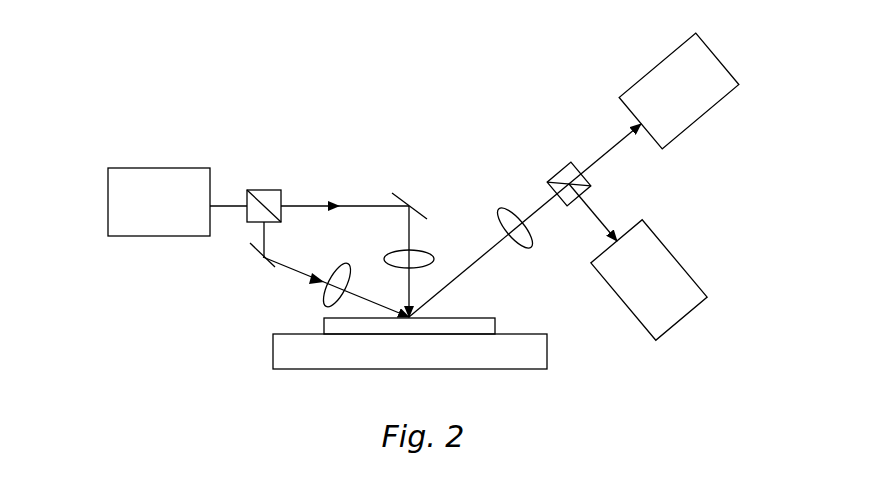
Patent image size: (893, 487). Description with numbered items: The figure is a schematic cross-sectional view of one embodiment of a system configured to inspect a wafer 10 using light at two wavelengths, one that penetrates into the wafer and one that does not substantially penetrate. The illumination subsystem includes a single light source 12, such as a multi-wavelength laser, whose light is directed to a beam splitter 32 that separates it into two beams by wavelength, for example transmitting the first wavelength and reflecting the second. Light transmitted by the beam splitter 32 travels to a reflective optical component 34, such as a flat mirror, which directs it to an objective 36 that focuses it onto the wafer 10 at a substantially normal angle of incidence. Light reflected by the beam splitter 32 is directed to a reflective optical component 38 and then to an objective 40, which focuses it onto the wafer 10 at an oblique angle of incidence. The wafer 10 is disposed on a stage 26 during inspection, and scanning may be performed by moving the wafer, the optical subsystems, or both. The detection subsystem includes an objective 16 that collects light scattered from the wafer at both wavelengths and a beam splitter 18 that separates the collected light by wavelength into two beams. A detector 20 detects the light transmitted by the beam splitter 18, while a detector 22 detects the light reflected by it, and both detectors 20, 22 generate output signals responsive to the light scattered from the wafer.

The wafer 10 is at (485, 318).
The light source 12 is at (108, 203).
The objective 16 is at (527, 245).
The beam splitter 18 is at (560, 172).
The detector 20 is at (723, 57).
The detector 22 is at (692, 272).
The stage 26 is at (547, 347).
The beam splitter 32 is at (267, 190).
The reflective optical component 34 is at (427, 212).
The objective 36 is at (433, 257).
The reflective optical component 38 is at (258, 254).
The objective 40 is at (322, 299).